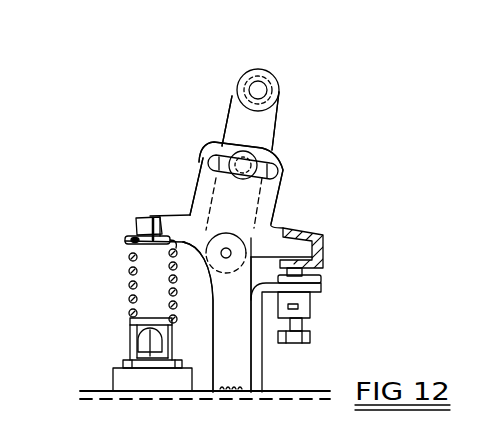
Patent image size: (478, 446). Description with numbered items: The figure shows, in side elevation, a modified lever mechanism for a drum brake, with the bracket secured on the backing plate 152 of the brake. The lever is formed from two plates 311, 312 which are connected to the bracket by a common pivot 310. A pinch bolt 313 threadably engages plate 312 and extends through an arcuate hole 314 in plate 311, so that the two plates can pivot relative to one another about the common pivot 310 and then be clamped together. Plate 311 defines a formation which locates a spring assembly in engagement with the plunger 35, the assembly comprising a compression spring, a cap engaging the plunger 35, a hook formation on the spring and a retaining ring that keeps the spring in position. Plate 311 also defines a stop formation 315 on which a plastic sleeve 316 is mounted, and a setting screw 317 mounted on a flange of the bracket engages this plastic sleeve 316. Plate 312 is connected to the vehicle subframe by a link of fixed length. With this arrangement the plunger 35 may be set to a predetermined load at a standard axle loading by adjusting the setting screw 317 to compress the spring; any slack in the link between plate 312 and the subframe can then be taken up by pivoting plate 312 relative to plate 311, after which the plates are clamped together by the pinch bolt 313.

The plunger 35 is at (130, 348).
The backing plate 152 is at (326, 391).
The common pivot 310 is at (226, 253).
The plate 311 is at (272, 197).
The plate 312 is at (272, 120).
The pinch bolt 313 is at (233, 156).
The arcuate hole 314 is at (212, 163).
The stop formation 315 is at (324, 268).
The plastic sleeve 316 is at (323, 232).
The setting screw 317 is at (311, 336).